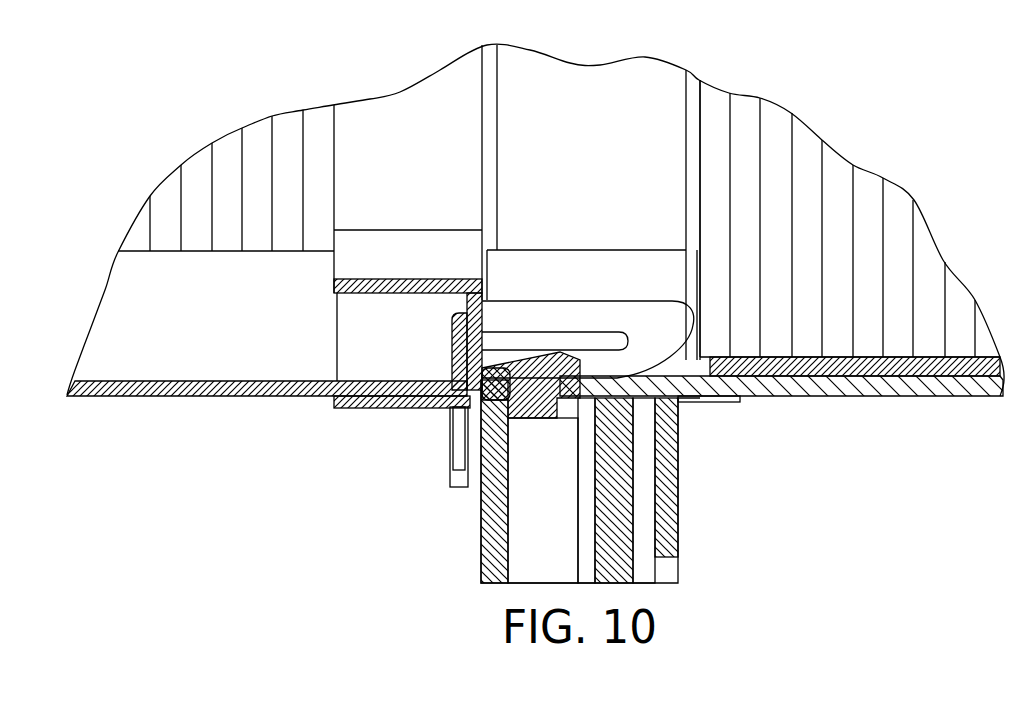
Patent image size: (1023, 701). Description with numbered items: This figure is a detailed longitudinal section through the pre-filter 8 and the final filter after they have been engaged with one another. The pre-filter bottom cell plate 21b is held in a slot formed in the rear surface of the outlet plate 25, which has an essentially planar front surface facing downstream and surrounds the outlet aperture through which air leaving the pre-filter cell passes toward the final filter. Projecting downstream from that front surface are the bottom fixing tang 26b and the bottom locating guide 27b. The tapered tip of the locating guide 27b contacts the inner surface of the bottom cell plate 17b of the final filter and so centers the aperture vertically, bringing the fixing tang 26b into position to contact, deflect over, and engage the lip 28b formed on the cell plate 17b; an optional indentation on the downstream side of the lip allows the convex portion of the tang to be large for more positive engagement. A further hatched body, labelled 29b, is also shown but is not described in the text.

The pre-filter 8 is at (143, 417).
The bottom cell plate 17b is at (878, 398).
The pre-filter bottom cell plate 21b is at (240, 397).
The outlet plate 25 is at (465, 488).
The bottom fixing tang 26b is at (518, 382).
The bottom locating guide 27b is at (663, 345).
The lip 28b is at (488, 380).
The tubular body 29b is at (630, 417).